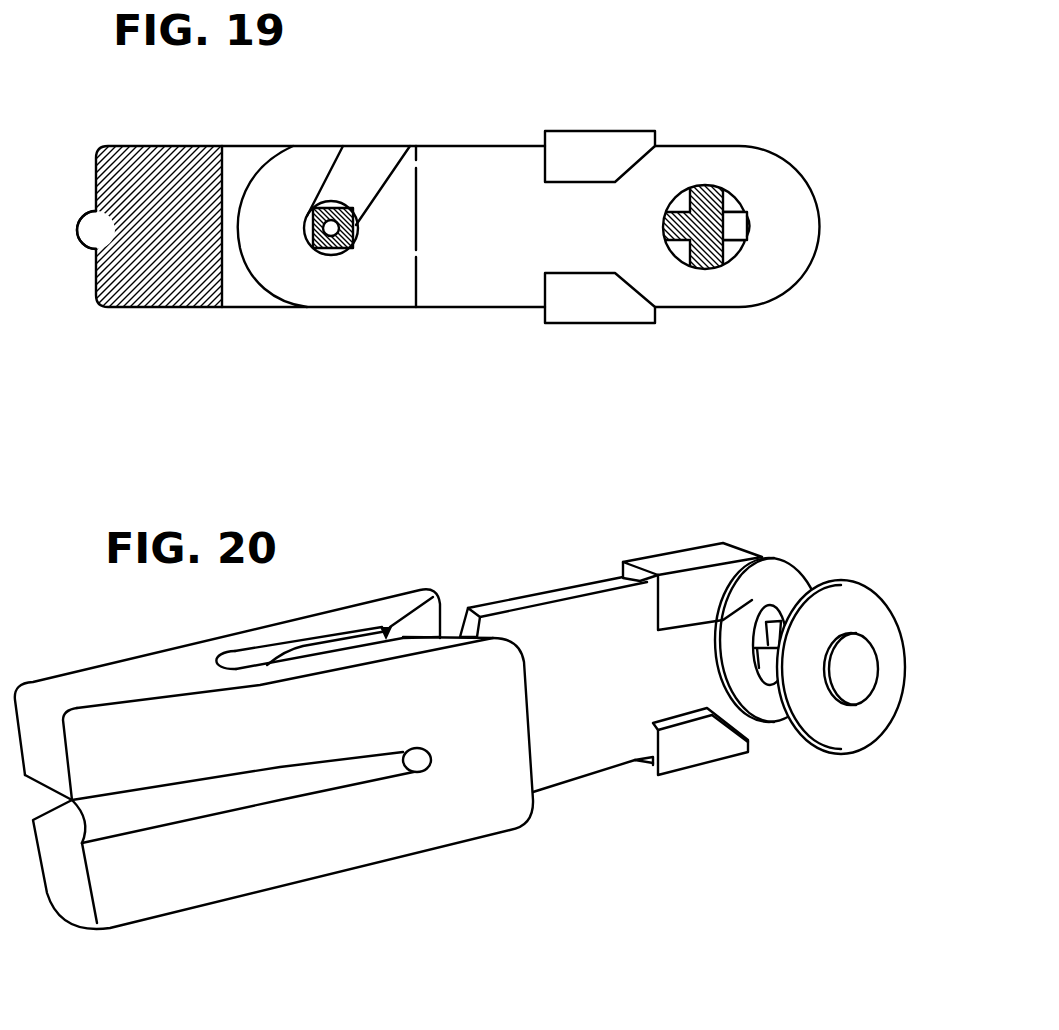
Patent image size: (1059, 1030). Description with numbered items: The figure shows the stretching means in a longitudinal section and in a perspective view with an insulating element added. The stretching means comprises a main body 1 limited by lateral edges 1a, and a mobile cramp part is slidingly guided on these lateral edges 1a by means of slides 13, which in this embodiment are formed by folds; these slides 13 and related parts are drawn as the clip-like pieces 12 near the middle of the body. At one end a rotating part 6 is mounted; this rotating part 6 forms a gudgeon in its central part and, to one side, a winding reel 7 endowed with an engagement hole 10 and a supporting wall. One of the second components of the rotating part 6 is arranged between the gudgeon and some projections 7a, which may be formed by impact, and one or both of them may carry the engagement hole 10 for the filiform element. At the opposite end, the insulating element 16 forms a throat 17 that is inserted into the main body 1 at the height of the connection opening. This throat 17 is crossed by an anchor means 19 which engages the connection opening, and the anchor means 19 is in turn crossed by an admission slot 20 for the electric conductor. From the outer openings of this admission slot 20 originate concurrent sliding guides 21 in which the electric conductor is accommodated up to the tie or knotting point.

In FIG. 20, the main body 1 is at (507, 560).
In FIG. 20, the lateral edges 1a is at (573, 588).
In FIG. 20, the rotating part 6 is at (868, 543).
In FIG. 20, the winding reel 7 is at (805, 584).
In FIG. 19, the projections 7a is at (668, 220).
In FIG. 20, the projections 7a is at (766, 690).
In FIG. 19, the engagement hole 10 is at (737, 204).
In FIG. 19, the clip assembly 12 is at (610, 96).
In FIG. 20, the clip assembly 12 is at (691, 510).
In FIG. 19, the slides 13 is at (545, 140).
In FIG. 20, the slides 13 is at (618, 574).
In FIG. 19, the insulating element 16 is at (215, 345).
In FIG. 20, the insulating element 16 is at (168, 940).
In FIG. 19, the throat 17 is at (352, 180).
In FIG. 20, the throat 17 is at (246, 655).
In FIG. 19, the anchor means 19 is at (354, 222).
In FIG. 19, the admission slot 20 is at (332, 237).
In FIG. 20, the admission slot 20 is at (422, 766).
In FIG. 19, the sliding guides 21 is at (100, 224).
In FIG. 20, the sliding guides 21 is at (258, 796).